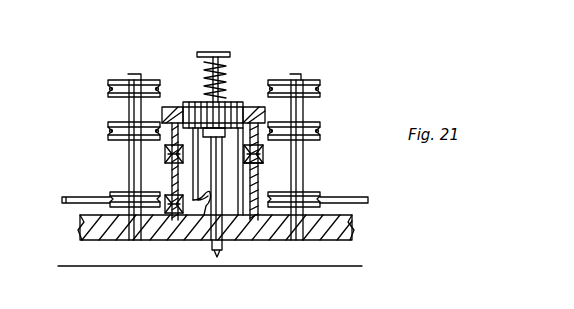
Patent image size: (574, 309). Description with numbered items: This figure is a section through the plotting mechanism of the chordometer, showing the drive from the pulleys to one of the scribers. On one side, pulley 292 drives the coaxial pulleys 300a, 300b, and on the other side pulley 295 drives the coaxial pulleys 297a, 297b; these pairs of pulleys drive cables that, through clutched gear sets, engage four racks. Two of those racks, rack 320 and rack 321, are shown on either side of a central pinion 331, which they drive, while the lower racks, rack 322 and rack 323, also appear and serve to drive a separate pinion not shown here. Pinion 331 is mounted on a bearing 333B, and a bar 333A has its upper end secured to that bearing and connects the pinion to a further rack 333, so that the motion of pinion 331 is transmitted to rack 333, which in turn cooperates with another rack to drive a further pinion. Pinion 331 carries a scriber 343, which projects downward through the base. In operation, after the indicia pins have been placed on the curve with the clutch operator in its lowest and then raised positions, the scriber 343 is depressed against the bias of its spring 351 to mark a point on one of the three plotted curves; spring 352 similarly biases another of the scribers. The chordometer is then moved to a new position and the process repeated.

The pulley 292 is at (120, 192).
The pulley 295 is at (316, 193).
The pulley 297a is at (310, 80).
The pulley 297b is at (314, 125).
The pulley 300a is at (116, 80).
The pulley 300b is at (116, 125).
The rack 320 is at (170, 107).
The rack 321 is at (255, 107).
The rack 322 is at (265, 152).
The rack 323 is at (165, 157).
The pinion 331 is at (232, 100).
The rack 333 is at (163, 213).
The bar 333A is at (202, 197).
The bearing 333B is at (262, 160).
The scriber 343 is at (220, 243).
The spring 351 is at (178, 100).
The spring 352 is at (551, 306).